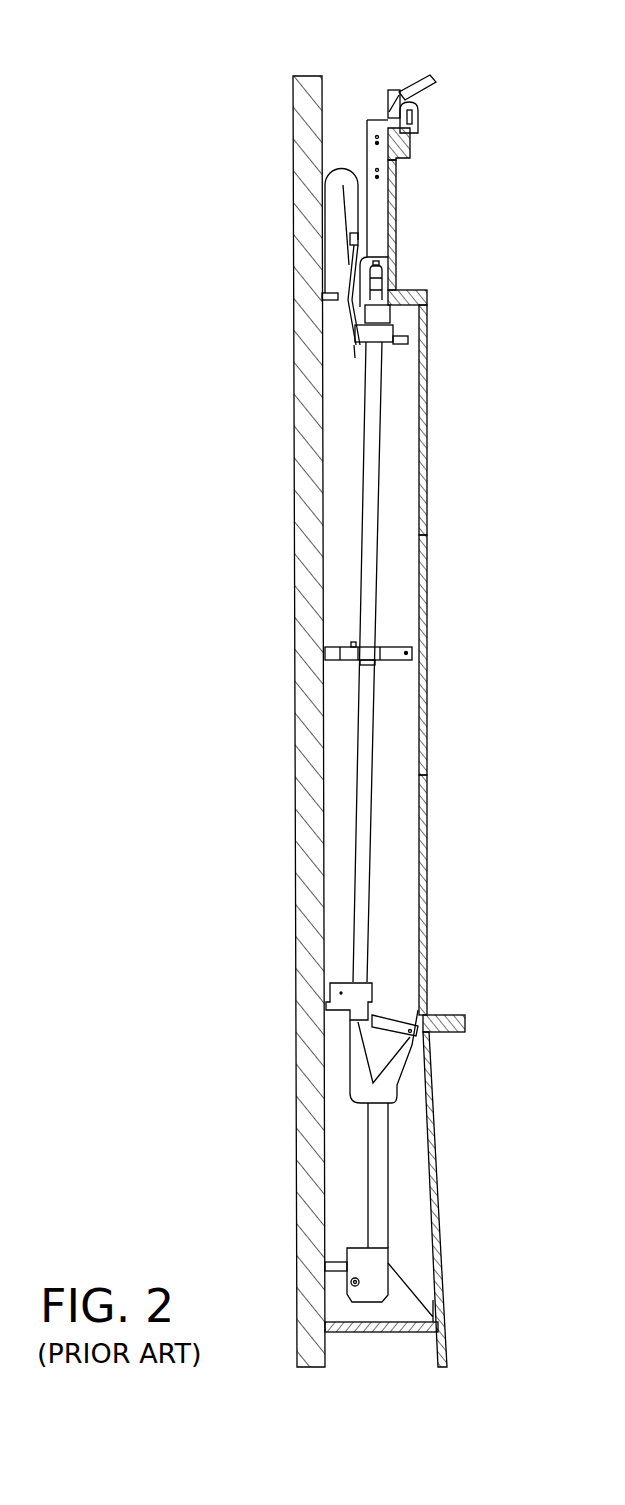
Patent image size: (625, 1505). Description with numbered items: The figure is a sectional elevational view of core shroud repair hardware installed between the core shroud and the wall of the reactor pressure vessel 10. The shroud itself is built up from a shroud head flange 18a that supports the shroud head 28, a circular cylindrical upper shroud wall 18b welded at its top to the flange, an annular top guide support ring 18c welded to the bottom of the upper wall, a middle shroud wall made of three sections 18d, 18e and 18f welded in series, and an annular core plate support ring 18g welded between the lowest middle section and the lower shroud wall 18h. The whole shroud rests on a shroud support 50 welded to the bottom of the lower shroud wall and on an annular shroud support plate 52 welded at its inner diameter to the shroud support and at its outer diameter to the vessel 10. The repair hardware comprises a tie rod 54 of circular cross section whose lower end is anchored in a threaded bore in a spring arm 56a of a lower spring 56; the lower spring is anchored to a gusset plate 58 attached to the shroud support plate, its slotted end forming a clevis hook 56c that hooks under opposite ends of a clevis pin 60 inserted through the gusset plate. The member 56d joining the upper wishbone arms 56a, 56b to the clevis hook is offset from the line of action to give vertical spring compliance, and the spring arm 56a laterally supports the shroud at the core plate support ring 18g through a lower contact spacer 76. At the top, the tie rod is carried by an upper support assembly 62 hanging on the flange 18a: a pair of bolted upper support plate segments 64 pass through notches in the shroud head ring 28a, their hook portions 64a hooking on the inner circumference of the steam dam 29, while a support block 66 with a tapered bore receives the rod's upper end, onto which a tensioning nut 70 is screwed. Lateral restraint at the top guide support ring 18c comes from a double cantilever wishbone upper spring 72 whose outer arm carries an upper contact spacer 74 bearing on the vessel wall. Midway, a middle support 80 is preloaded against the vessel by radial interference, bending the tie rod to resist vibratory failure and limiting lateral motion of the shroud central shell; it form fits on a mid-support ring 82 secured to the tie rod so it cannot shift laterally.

The reactor pressure vessel 10 is at (296, 557).
The shroud head 28 is at (410, 72).
The shroud head ring 28a is at (387, 100).
The steam dam 29 is at (414, 122).
The shroud head flange 18a is at (410, 142).
The upper shroud wall 18b is at (397, 228).
The top guide support ring 18c is at (426, 293).
The middle shroud wall section 18d is at (428, 455).
The middle shroud wall section 18e is at (428, 730).
The middle shroud wall section 18f is at (428, 836).
The core plate support ring 18g is at (448, 1035).
The lower shroud wall 18h is at (440, 1195).
The shroud support 50 is at (440, 1310).
The shroud support plate 52 is at (360, 1335).
The tie rod 54 is at (358, 826).
The lower spring 56 is at (371, 1156).
The spring arm 56a is at (350, 1065).
The wishbone spring arm 56b is at (402, 1052).
The clevis hook 56c is at (385, 1257).
The connecting member 56d is at (378, 1150).
The gusset plate 58 is at (335, 1268).
The clevis pin 60 is at (350, 1283).
The upper support assembly 62 is at (365, 148).
The upper support plate segments 64 is at (375, 210).
The hook portion 64a is at (420, 115).
The support block 66 is at (380, 333).
The tensioning nut 70 is at (382, 312).
The upper spring 72 is at (330, 183).
The upper contact spacer 74 is at (324, 298).
The lower contact spacer 76 is at (332, 982).
The middle support 80 is at (397, 645).
The mid-support ring 82 is at (372, 664).